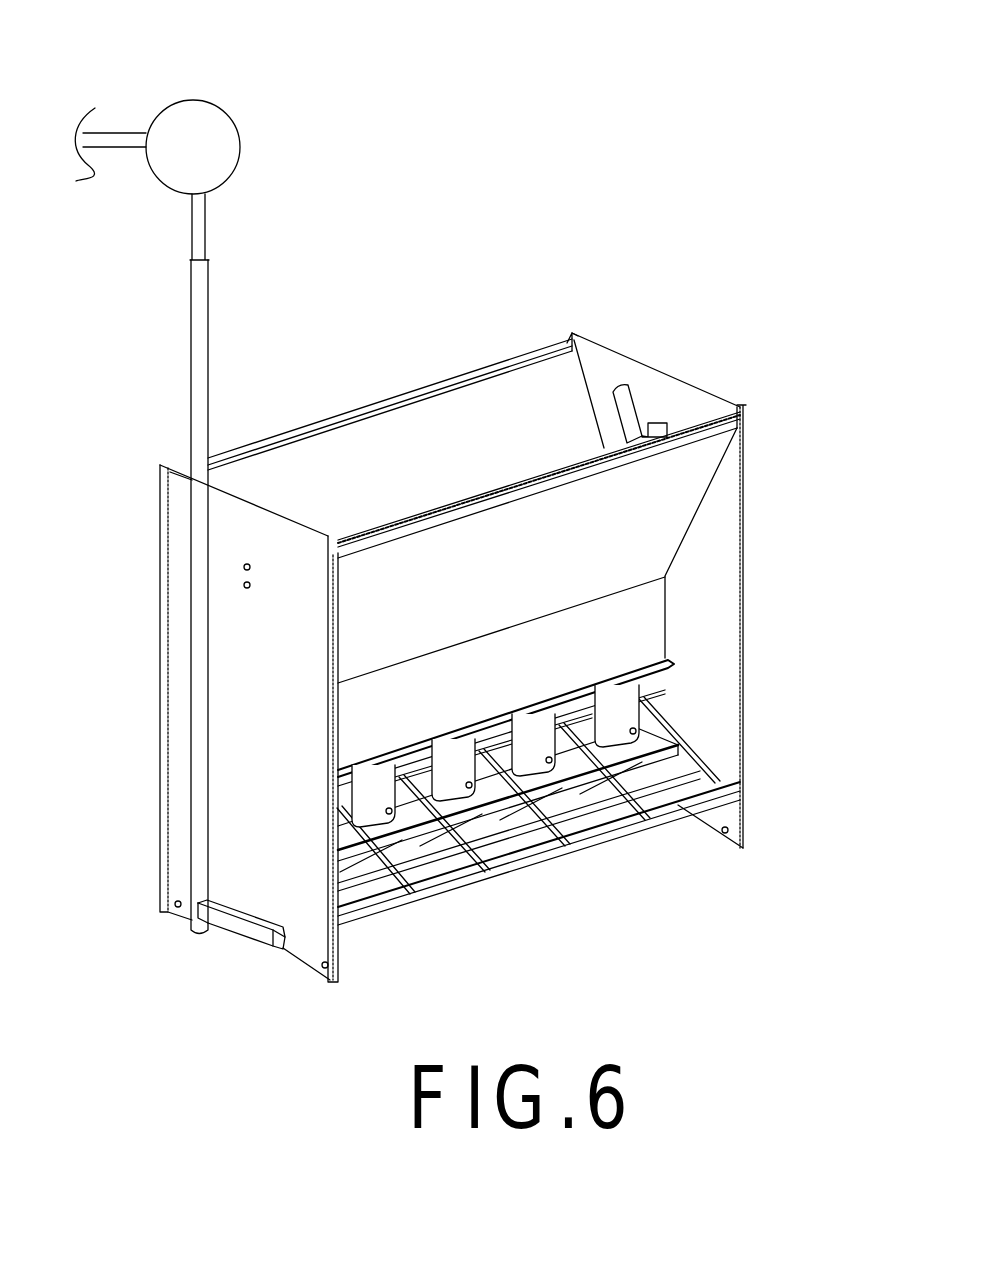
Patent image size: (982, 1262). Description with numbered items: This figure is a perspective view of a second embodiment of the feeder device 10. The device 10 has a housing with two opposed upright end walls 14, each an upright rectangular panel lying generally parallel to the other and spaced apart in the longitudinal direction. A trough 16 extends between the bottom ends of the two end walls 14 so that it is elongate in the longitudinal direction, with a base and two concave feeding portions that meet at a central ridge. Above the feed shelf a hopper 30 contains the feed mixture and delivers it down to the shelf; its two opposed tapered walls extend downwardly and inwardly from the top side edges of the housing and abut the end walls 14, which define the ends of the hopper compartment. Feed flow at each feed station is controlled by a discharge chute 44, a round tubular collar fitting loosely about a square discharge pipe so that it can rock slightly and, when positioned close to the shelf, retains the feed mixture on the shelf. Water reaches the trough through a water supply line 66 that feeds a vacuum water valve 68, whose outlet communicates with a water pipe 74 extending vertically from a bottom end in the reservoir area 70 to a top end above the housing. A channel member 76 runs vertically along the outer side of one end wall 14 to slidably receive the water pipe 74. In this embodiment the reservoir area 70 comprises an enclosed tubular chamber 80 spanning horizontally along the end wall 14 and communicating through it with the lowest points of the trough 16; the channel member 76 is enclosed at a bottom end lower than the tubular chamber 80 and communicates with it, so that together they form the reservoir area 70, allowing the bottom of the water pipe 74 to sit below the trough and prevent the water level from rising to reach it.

The feeder device 10 is at (403, 292).
The end wall 14 is at (182, 663).
The trough 16 is at (586, 818).
The hopper 30 is at (515, 430).
The discharge chute 44 is at (375, 813).
The water supply line 66 is at (110, 133).
The vacuum water valve 68 is at (224, 142).
The reservoir area 70 is at (221, 952).
The water pipe 74 is at (206, 222).
The channel member 76 is at (193, 332).
The tubular chamber 80 is at (243, 920).